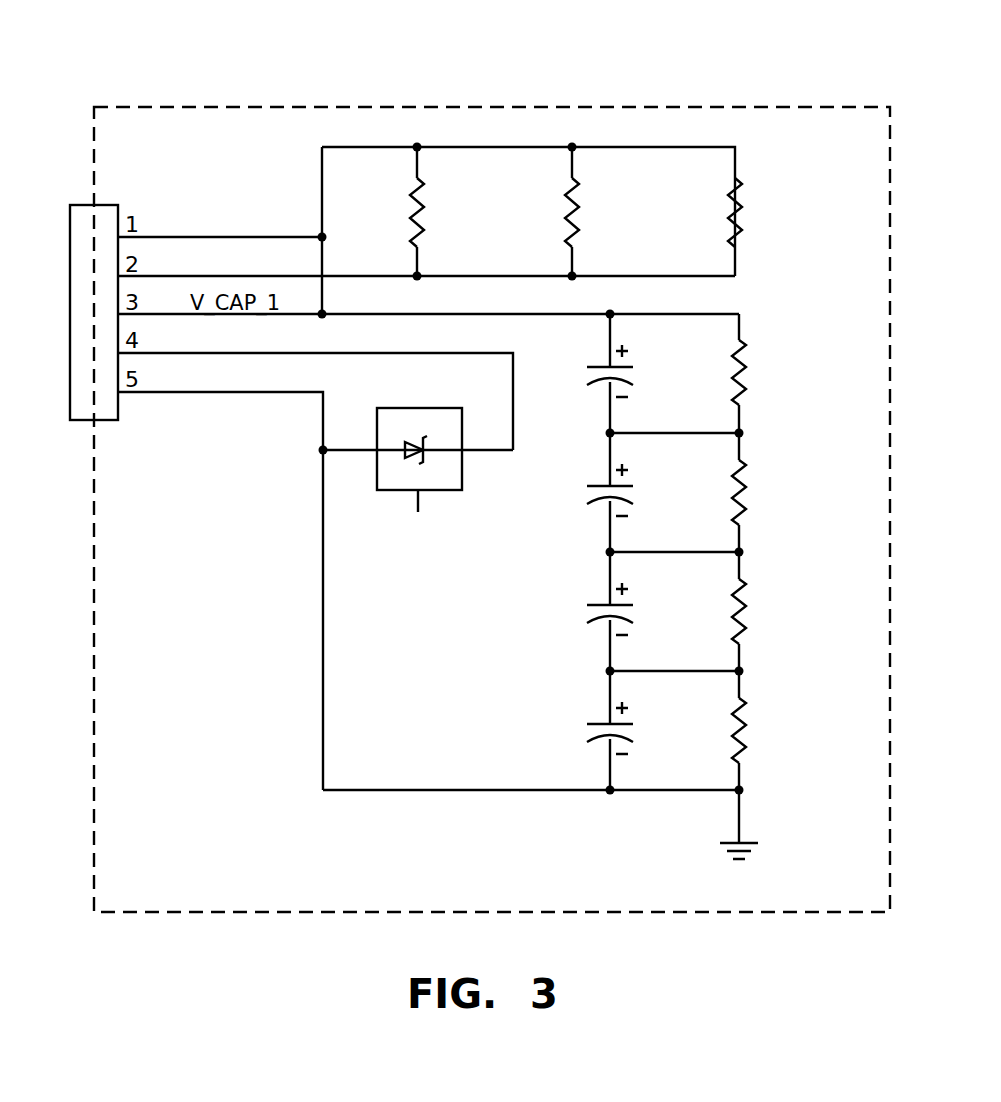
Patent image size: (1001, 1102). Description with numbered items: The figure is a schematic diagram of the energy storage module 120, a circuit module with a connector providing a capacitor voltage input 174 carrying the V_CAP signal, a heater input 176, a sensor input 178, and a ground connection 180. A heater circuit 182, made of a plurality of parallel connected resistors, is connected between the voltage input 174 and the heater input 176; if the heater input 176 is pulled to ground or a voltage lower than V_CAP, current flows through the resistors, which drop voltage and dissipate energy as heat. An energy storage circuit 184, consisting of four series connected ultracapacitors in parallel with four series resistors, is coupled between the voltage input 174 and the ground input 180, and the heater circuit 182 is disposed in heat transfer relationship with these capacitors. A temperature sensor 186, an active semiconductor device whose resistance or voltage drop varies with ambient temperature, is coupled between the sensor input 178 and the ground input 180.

The energy storage module 120 is at (481, 103).
The capacitor voltage input 174 is at (147, 237).
The heater input 176 is at (170, 276).
The sensor input 178 is at (149, 353).
The ground connection 180 is at (173, 392).
The heater circuit 182 is at (677, 147).
The energy storage circuit 184 is at (530, 610).
The temperature sensor 186 is at (400, 490).